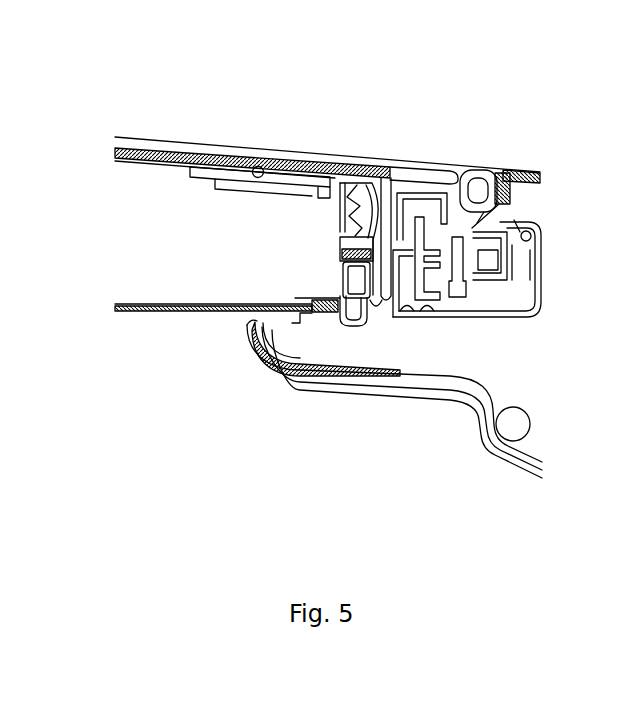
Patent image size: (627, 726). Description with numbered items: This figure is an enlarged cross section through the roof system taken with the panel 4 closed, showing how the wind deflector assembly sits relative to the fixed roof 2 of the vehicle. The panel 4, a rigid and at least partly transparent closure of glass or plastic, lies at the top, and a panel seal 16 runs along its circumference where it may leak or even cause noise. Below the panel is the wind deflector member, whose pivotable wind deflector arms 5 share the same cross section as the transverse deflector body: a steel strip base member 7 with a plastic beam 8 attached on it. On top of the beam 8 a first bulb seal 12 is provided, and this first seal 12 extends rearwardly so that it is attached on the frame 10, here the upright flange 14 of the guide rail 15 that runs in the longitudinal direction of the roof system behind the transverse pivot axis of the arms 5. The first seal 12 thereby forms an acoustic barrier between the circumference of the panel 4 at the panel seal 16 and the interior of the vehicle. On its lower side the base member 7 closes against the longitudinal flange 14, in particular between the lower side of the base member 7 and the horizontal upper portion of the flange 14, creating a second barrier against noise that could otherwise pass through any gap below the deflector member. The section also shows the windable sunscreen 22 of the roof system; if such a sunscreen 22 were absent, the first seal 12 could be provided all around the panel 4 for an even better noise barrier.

The fixed roof 2 is at (537, 171).
The panel 4 is at (212, 148).
The wind deflector arm 5 is at (358, 212).
The base member 7 is at (346, 255).
The plastic beam 8 is at (360, 178).
The frame 10 is at (531, 330).
The first seal 12 is at (389, 195).
The upright flange 14 is at (387, 305).
The guide rail 15 is at (502, 322).
The panel seal 16 is at (483, 170).
The windable sunscreen 22 is at (163, 311).